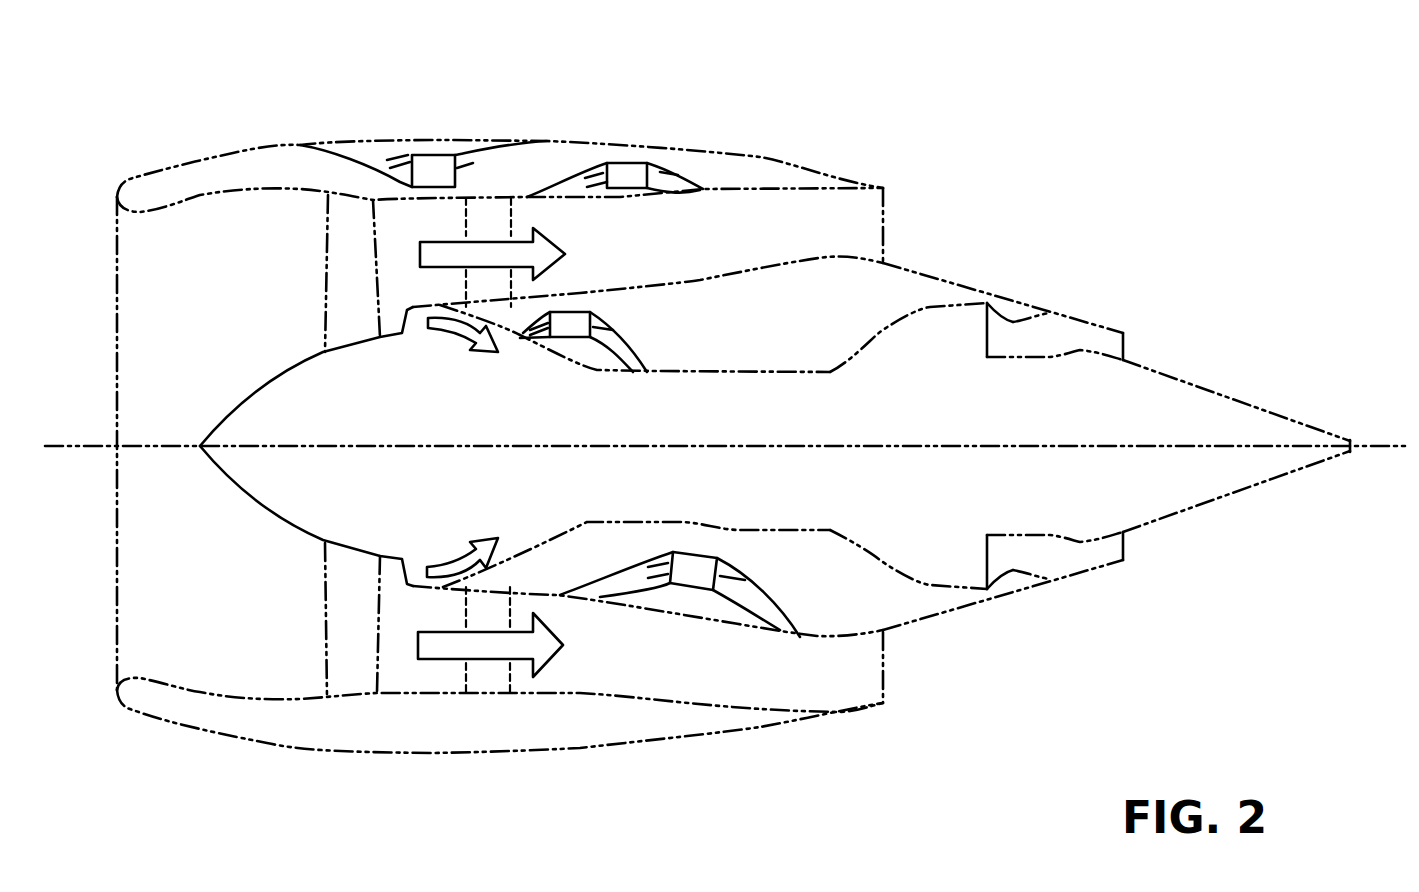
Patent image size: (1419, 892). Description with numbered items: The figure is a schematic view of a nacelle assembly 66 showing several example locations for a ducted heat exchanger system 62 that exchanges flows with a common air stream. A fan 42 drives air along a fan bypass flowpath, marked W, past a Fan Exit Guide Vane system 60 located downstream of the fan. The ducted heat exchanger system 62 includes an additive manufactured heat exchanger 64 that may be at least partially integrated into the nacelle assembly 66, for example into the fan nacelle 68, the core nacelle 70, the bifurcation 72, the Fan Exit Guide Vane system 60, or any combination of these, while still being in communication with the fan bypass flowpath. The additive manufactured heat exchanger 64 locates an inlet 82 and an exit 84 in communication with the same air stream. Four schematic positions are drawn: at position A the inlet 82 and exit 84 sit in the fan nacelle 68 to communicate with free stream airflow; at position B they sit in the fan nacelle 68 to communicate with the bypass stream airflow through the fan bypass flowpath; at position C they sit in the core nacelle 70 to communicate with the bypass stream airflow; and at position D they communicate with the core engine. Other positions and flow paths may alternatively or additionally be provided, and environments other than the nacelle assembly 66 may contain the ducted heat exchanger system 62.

The fan 42 is at (334, 285).
The Fan Exit Guide Vane system 60 is at (478, 217).
The ducted heat exchanger system 62 is at (556, 126).
The additive manufactured heat exchanger 64 is at (432, 156).
The nacelle assembly 66 is at (1048, 203).
The fan nacelle 68 is at (884, 164).
The core nacelle 70 is at (1128, 308).
The bifurcation 72 is at (745, 682).
The inlet 82 is at (362, 150).
The exit 84 is at (497, 152).